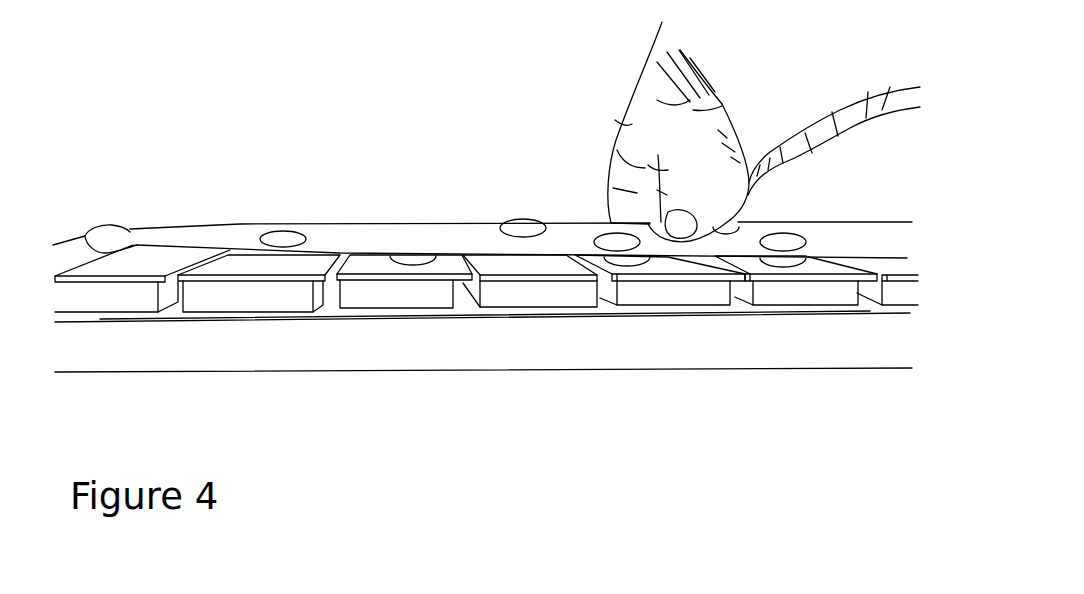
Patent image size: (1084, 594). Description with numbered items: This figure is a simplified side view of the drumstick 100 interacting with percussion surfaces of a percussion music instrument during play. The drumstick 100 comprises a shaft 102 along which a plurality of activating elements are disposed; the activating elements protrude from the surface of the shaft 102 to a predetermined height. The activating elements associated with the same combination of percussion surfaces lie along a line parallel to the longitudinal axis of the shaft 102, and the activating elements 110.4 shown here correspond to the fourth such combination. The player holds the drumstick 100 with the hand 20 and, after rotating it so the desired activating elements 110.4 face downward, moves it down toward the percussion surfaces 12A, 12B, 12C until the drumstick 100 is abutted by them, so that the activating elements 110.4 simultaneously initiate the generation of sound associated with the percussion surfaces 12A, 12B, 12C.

The player's hand 20 is at (630, 127).
The drumstick 100 is at (426, 205).
The shaft 102 is at (232, 231).
The activating elements 110.4 is at (413, 245).
The percussion surface 12A is at (437, 298).
The percussion surface 12B is at (637, 300).
The percussion surface 12C is at (783, 293).